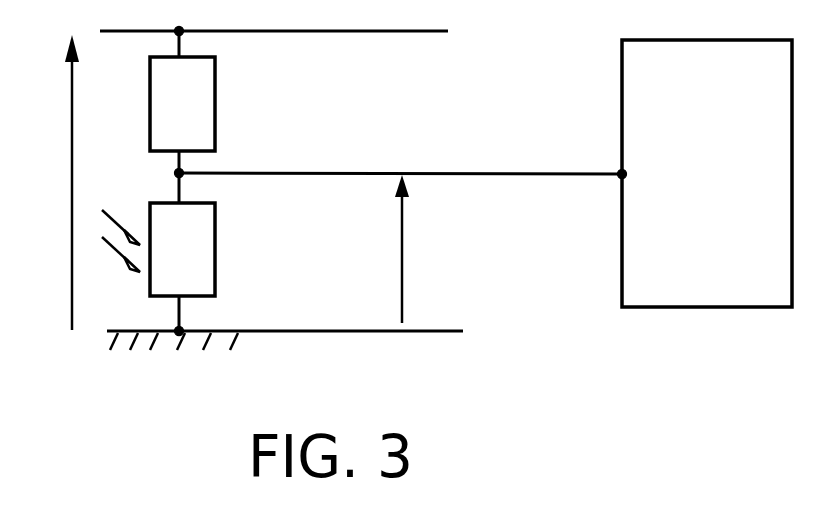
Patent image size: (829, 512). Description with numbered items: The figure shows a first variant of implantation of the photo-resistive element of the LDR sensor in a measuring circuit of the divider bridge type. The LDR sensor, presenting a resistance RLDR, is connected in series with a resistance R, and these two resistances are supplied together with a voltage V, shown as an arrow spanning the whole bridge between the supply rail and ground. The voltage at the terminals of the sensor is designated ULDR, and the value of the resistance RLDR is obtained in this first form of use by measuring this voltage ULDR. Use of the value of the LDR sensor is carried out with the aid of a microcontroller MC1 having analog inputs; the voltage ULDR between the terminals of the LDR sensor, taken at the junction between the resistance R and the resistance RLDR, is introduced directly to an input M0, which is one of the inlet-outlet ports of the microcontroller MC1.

The supply voltage V is at (45, 182).
The resistance R is at (209, 104).
The resistance of the LDR sensor RLDR is at (210, 249).
The voltage at the terminals of the LDR sensor ULDR is at (460, 249).
The microcontroller MC1 is at (771, 98).
The input M0 is at (642, 174).